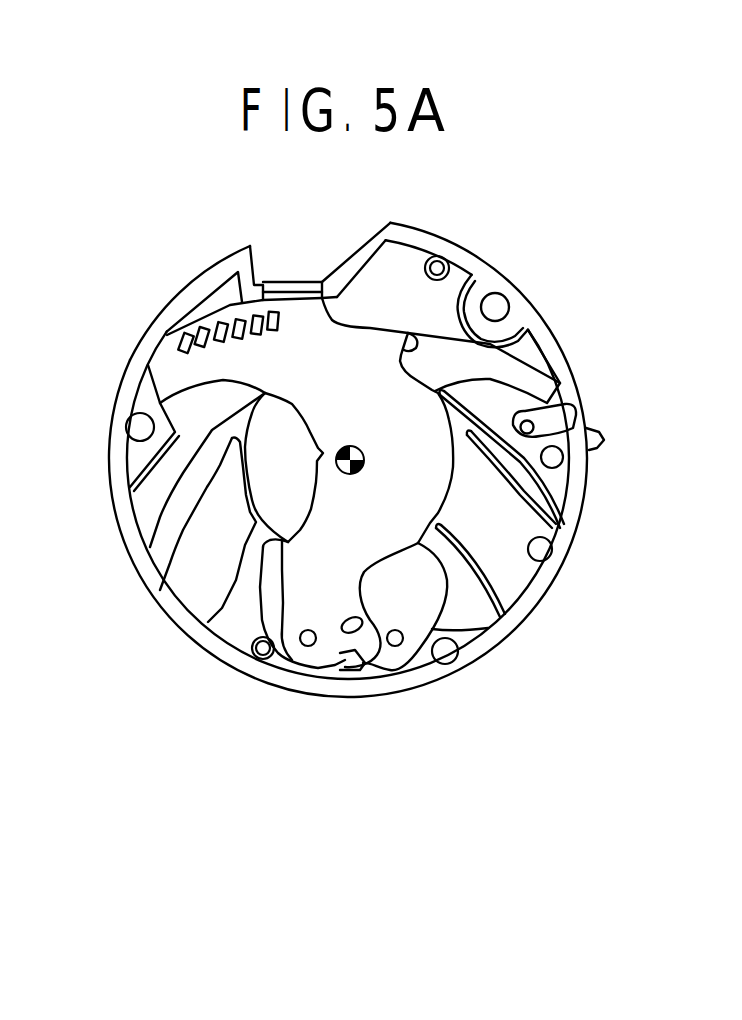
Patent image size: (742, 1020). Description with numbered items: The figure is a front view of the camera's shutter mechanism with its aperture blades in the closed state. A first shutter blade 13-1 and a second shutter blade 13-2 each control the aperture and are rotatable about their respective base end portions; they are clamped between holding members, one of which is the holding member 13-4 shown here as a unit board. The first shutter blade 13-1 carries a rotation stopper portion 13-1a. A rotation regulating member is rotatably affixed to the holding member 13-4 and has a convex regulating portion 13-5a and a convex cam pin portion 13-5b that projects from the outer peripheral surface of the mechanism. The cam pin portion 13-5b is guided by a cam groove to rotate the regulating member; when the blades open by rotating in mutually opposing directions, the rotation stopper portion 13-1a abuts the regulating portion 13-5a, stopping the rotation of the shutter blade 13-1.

The shutter blade 13-1 is at (200, 315).
The rotation stopper portion 13-1a is at (418, 335).
The shutter blade 13-2 is at (517, 367).
The holding member 13-4 is at (397, 258).
The regulating portion 13-5a is at (530, 423).
The cam pin portion 13-5b is at (603, 441).